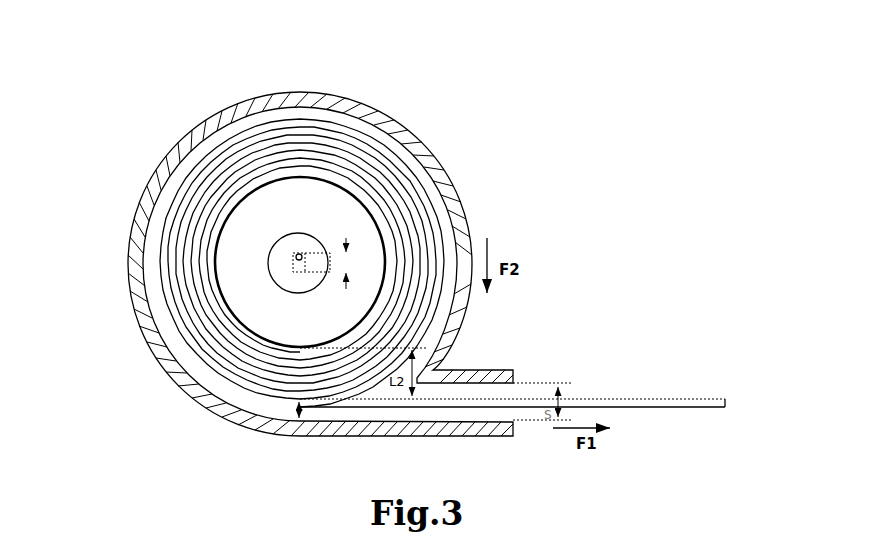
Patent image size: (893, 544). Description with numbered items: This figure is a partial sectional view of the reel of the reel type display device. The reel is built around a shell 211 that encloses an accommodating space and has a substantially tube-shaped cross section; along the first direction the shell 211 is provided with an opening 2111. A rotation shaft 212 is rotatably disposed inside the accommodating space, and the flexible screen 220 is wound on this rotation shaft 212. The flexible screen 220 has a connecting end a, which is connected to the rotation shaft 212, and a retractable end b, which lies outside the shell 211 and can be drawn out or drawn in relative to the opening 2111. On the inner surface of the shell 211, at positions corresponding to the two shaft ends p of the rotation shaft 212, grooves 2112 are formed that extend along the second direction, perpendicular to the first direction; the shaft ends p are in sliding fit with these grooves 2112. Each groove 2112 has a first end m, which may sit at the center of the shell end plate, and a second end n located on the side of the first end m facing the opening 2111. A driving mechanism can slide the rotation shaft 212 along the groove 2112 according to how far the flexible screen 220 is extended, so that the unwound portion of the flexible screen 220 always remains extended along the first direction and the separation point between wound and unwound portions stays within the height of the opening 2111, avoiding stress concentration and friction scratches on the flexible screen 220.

The shell 211 is at (221, 118).
The opening 2111 is at (515, 392).
The groove 2112 is at (295, 265).
The rotation shaft 212 is at (318, 322).
The flexible screen 220 is at (615, 402).
The connecting end a is at (282, 176).
The retractable end b is at (724, 398).
The first end m is at (290, 249).
The second end n is at (296, 284).
The shaft end p is at (304, 252).